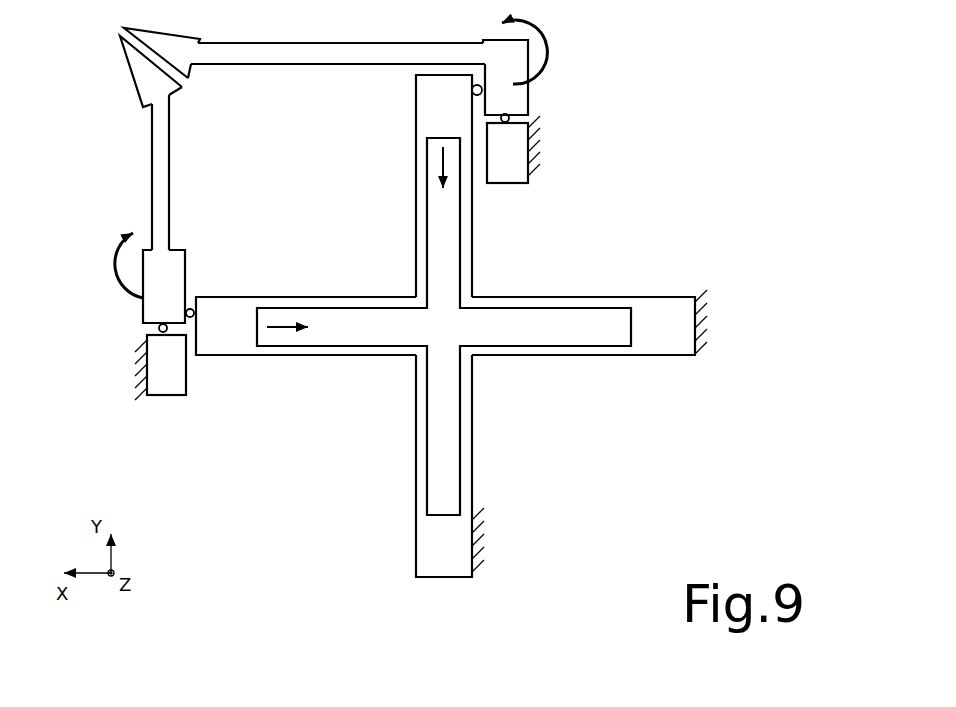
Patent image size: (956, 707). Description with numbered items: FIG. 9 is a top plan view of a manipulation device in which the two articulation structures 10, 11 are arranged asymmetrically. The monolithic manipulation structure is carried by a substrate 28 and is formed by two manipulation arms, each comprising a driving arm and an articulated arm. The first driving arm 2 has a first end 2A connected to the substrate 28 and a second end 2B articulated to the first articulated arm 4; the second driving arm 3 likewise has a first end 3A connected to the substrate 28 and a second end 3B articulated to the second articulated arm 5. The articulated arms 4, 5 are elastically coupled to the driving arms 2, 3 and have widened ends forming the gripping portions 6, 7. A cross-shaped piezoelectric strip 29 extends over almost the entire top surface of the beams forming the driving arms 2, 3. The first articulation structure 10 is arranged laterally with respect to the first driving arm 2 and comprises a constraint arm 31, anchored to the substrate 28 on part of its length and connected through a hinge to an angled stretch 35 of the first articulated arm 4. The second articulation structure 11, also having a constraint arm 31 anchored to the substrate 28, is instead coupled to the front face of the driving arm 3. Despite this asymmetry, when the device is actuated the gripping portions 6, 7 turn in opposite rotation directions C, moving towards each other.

The first driving arm 2 is at (467, 451).
The first end of the first driving arm 2A is at (428, 544).
The second end of the first driving arm 2B is at (432, 113).
The second driving arm 3 is at (567, 300).
The first end of the second driving arm 3A is at (672, 322).
The second end of the second driving arm 3B is at (233, 310).
The first articulated arm 4 is at (302, 50).
The second articulated arm 5 is at (160, 175).
The gripping portion 6 is at (168, 40).
The gripping portion 7 is at (137, 65).
The first articulation structure 10 is at (547, 97).
The second articulation structure 11 is at (117, 328).
The substrate 28 is at (135, 372).
The piezoelectric strip 29 is at (432, 247).
The constraint arm 31 is at (167, 383).
The angled stretch 35 is at (515, 107).
The rotation direction C is at (548, 32).